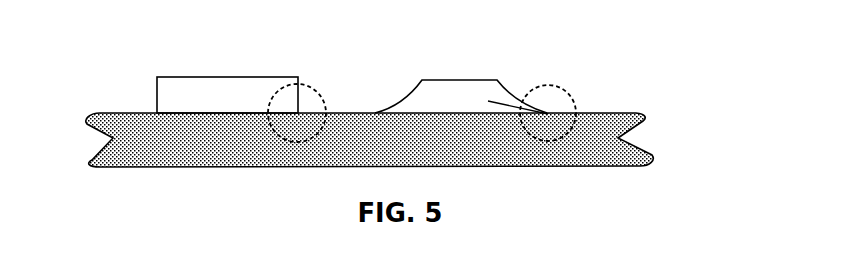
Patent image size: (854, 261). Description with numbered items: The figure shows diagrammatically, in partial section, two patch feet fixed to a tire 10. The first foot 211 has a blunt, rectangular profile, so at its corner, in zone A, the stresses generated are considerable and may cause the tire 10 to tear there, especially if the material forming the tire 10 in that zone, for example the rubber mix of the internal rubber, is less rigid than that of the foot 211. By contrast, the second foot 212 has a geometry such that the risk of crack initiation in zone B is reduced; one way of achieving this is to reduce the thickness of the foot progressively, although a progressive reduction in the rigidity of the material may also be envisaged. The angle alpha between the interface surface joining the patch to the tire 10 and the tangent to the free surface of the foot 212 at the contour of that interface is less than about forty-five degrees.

The tire 10 is at (619, 138).
The foot 211 is at (203, 110).
The foot 212 is at (442, 110).
The zone A is at (321, 98).
The zone B is at (571, 94).